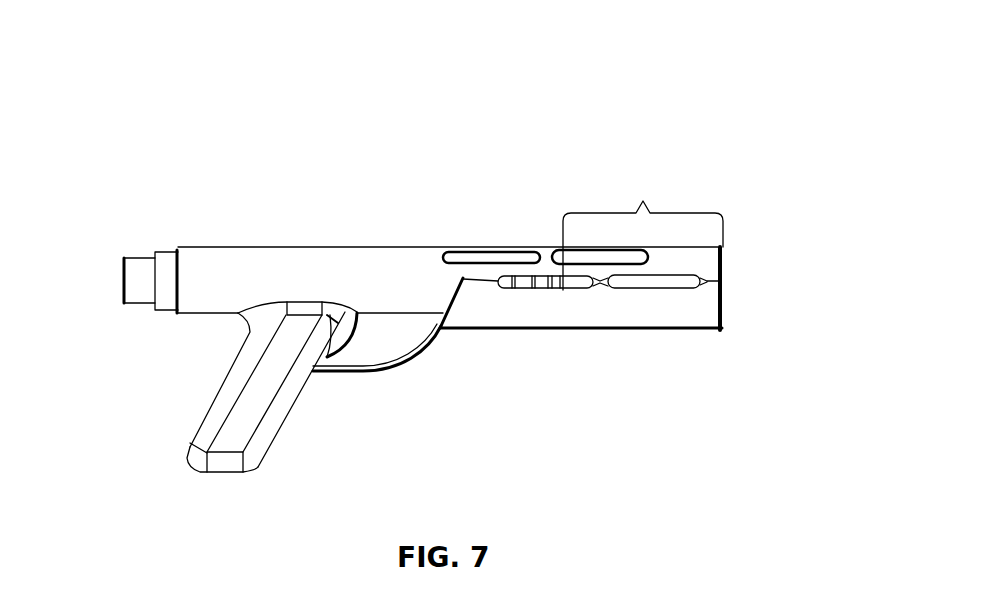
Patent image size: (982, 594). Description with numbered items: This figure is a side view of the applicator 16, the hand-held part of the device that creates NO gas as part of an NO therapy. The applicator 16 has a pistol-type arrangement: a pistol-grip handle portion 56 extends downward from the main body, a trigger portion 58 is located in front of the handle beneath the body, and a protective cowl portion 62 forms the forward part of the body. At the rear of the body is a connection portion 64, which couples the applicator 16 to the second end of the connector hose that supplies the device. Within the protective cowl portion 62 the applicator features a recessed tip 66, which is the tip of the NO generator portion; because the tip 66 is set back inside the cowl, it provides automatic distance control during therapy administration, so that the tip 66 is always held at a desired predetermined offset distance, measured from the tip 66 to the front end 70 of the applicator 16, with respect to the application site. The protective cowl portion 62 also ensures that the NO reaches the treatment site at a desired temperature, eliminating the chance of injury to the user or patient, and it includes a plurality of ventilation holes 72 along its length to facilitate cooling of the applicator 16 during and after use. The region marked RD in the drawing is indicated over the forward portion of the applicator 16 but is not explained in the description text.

The applicator 16 is at (199, 119).
The pistol-grip handle portion 56 is at (220, 433).
The trigger portion 58 is at (350, 348).
The protective cowl portion 62 is at (690, 332).
The connection portion 64 is at (125, 275).
The recessed tip 66 is at (565, 290).
The front end 70 is at (733, 272).
The ventilation holes 72 is at (480, 250).
The display region RD is at (643, 225).